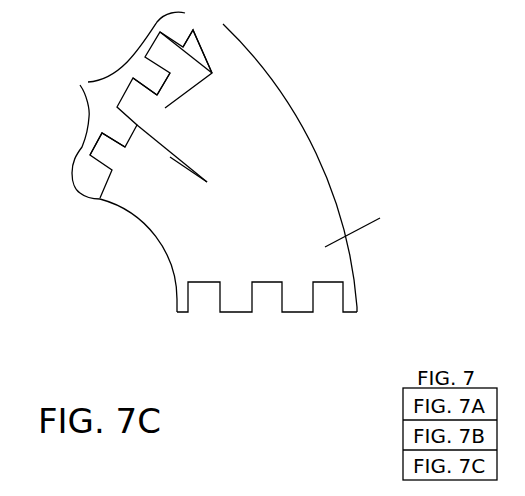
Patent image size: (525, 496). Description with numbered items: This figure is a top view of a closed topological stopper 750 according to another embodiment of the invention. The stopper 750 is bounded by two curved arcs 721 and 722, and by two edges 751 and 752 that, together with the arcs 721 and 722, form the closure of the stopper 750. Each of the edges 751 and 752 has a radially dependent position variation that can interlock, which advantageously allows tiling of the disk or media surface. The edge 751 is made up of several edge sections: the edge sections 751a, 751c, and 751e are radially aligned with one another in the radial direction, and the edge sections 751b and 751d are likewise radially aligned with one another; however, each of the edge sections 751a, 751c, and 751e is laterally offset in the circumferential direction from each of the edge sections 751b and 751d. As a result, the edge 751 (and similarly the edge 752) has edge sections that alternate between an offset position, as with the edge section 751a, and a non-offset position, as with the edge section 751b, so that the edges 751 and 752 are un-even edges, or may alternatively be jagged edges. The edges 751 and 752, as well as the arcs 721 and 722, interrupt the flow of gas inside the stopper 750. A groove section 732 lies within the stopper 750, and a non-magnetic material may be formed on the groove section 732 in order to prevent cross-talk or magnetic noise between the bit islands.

The curved arc 721 is at (143, 223).
The curved arc 722 is at (283, 100).
The groove section 732 is at (369, 229).
The closed topological stopper 750 is at (172, 268).
The edge 751 is at (88, 82).
The edge section 751a is at (96, 139).
The edge section 751b is at (207, 182).
The edge section 751c is at (167, 110).
The edge section 751d is at (157, 78).
The edge section 751e is at (212, 72).
The edge 752 is at (363, 307).